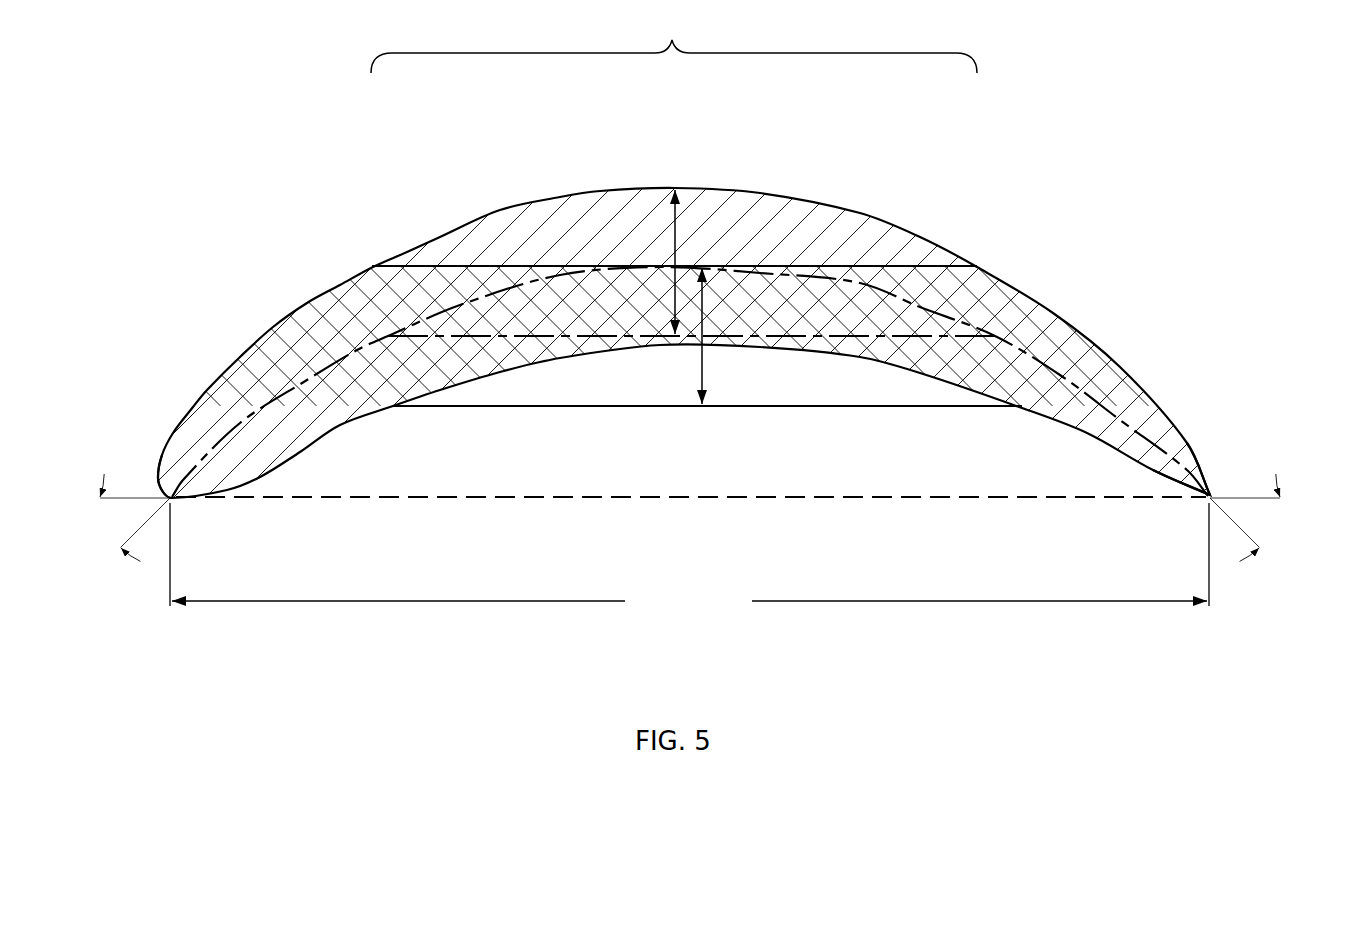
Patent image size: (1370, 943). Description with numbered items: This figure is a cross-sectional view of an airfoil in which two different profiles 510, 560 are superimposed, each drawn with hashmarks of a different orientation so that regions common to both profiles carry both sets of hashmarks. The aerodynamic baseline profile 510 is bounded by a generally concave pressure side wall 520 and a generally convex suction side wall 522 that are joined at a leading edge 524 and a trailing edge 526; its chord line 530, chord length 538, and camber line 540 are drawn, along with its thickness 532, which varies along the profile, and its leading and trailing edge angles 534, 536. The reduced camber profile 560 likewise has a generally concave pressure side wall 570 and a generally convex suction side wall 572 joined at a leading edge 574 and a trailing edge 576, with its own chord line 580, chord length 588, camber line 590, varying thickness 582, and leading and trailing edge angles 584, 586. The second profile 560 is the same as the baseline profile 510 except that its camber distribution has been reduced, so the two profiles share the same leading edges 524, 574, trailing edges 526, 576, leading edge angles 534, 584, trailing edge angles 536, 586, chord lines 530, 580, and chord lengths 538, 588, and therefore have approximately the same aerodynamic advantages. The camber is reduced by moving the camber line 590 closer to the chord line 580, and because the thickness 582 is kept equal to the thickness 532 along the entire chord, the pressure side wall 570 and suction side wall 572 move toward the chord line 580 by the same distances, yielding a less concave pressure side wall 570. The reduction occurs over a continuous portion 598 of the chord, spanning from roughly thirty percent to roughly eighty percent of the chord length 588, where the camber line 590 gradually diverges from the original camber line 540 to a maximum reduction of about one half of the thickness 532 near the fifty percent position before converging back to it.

The aerodynamic baseline airfoil profile 510 is at (545, 192).
The pressure side wall 520 is at (338, 423).
The suction side wall 522 is at (327, 289).
The leading edge 524 is at (229, 504).
The trailing edge 526 is at (1152, 498).
The chord line 530 is at (691, 529).
The thickness 532 is at (676, 217).
The leading edge angle 534 is at (92, 517).
The trailing edge angle 536 is at (1284, 517).
The chord length 538 is at (689, 560).
The camber line 540 is at (937, 309).
The reduced camber airfoil profile 560 is at (433, 411).
The pressure side wall 570 is at (568, 407).
The suction side wall 572 is at (812, 265).
The leading edge 574 is at (188, 500).
The trailing edge 576 is at (1205, 500).
The chord line 580 is at (806, 500).
The thickness 582 is at (703, 380).
The leading edge angle 584 is at (92, 517).
The trailing edge angle 586 is at (1284, 517).
The chord length 588 is at (689, 560).
The camber line 590 is at (870, 345).
The continuous portion of the chord length 598 is at (674, 41).